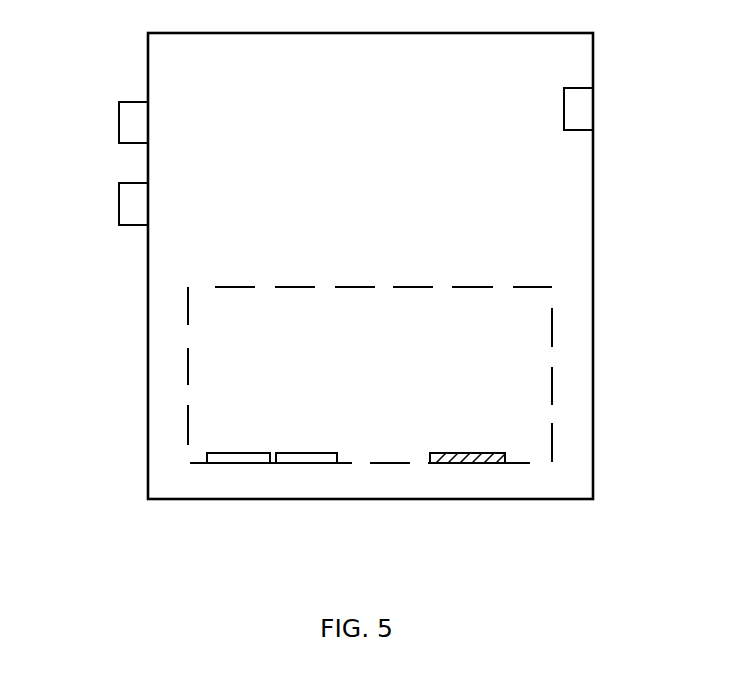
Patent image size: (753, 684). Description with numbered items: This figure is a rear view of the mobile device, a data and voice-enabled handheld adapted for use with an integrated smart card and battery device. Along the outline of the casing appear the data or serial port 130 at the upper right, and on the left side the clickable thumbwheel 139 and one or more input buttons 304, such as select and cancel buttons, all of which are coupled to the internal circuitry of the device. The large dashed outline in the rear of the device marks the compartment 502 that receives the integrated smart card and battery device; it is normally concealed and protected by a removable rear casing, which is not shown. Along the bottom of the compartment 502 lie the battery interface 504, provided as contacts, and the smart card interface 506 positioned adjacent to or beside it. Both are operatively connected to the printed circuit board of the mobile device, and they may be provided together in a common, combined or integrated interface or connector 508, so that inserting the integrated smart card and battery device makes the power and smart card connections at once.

The data or serial port 130 is at (578, 109).
The clickable thumbwheel 139 is at (133, 122).
The input buttons 304 is at (133, 210).
The compartment 502 is at (233, 328).
The battery interface 504 is at (320, 463).
The smart card interface 506 is at (243, 463).
The integrated interface or connector 508 is at (475, 463).